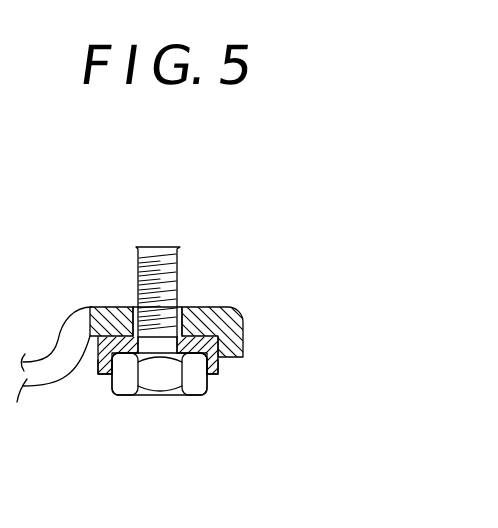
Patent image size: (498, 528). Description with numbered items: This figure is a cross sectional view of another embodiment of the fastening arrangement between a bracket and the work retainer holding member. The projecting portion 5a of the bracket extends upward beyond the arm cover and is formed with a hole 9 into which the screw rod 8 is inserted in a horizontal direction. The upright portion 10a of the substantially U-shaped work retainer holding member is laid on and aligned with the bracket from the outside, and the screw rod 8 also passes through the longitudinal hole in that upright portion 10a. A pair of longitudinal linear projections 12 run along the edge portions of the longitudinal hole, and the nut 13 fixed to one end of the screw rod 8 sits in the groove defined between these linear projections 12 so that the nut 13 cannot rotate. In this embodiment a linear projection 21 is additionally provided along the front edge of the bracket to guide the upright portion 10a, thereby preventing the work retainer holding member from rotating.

The screw rod 8 is at (180, 263).
The hole 9 is at (178, 312).
The projecting portion 5a is at (237, 316).
The linear projection 21 is at (243, 334).
The upright portion 10a is at (222, 356).
The longitudinal linear projections 12 is at (222, 366).
The nut 13 is at (168, 377).